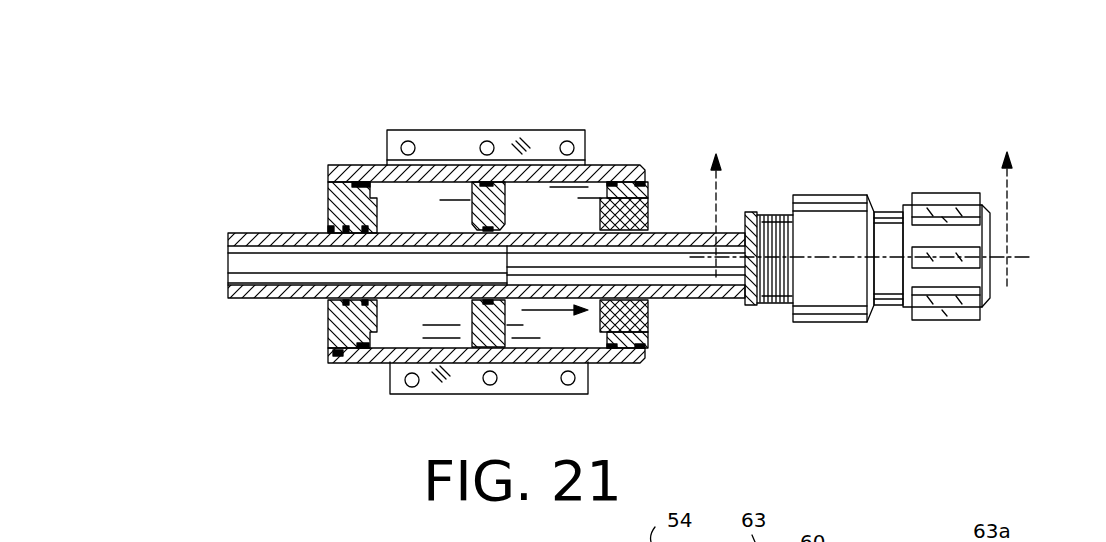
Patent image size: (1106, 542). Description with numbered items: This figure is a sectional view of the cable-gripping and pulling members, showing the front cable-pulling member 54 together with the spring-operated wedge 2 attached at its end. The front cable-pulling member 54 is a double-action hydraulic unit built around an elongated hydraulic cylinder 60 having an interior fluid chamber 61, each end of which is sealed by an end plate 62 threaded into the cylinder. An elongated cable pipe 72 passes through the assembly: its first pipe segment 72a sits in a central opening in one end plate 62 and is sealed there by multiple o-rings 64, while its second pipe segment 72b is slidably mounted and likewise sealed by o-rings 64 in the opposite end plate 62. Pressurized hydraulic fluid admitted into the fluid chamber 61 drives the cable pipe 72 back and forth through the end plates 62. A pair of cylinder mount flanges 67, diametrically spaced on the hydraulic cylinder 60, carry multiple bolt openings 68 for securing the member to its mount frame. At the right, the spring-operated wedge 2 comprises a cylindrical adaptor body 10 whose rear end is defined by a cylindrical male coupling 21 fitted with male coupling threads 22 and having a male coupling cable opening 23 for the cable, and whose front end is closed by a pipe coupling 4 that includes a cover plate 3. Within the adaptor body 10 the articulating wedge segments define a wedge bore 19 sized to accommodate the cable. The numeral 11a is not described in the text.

The spring-operated wedge 2 is at (851, 331).
The cover plate 3 is at (990, 294).
The pipe coupling 4 is at (946, 186).
The adaptor body 10 is at (841, 186).
The housing 11a is at (328, 168).
The wedge bore 19 is at (472, 218).
The male coupling 21 is at (767, 198).
The male coupling threads 22 is at (784, 306).
The male coupling cable opening 23 is at (492, 184).
The front cable-pulling member 54 is at (371, 136).
The hydraulic cylinder 60 is at (606, 165).
The fluid chamber 61 is at (418, 324).
The end plate 62 is at (340, 181).
The o-rings 64 is at (368, 229).
The cylinder mount flanges 67 is at (525, 144).
The bolt openings 68 is at (488, 141).
The cable pipe 72 is at (222, 298).
The first pipe segment 72a is at (272, 300).
The second pipe segment 72b is at (737, 298).